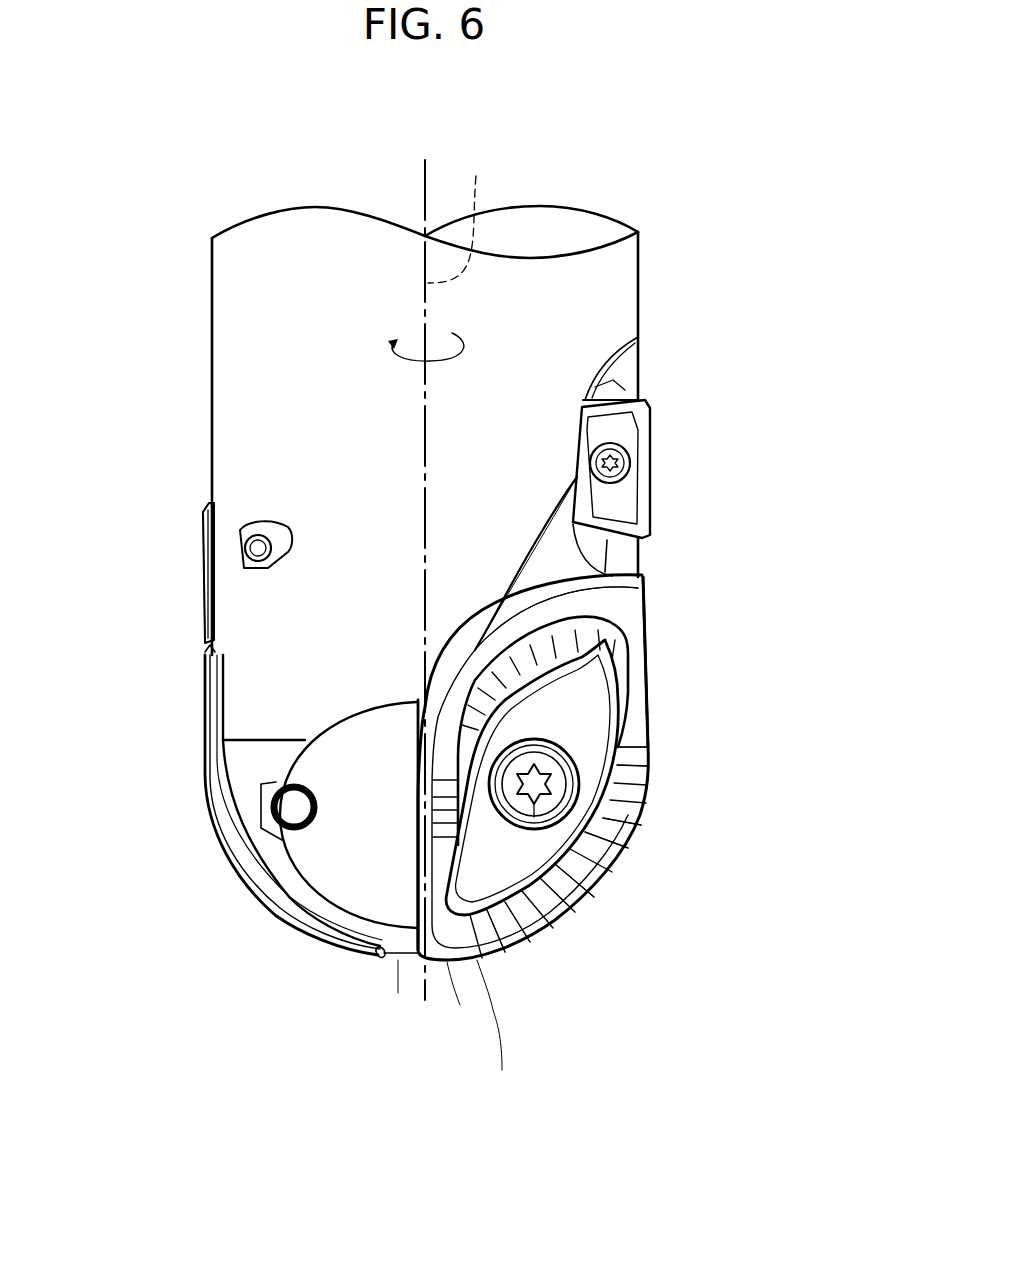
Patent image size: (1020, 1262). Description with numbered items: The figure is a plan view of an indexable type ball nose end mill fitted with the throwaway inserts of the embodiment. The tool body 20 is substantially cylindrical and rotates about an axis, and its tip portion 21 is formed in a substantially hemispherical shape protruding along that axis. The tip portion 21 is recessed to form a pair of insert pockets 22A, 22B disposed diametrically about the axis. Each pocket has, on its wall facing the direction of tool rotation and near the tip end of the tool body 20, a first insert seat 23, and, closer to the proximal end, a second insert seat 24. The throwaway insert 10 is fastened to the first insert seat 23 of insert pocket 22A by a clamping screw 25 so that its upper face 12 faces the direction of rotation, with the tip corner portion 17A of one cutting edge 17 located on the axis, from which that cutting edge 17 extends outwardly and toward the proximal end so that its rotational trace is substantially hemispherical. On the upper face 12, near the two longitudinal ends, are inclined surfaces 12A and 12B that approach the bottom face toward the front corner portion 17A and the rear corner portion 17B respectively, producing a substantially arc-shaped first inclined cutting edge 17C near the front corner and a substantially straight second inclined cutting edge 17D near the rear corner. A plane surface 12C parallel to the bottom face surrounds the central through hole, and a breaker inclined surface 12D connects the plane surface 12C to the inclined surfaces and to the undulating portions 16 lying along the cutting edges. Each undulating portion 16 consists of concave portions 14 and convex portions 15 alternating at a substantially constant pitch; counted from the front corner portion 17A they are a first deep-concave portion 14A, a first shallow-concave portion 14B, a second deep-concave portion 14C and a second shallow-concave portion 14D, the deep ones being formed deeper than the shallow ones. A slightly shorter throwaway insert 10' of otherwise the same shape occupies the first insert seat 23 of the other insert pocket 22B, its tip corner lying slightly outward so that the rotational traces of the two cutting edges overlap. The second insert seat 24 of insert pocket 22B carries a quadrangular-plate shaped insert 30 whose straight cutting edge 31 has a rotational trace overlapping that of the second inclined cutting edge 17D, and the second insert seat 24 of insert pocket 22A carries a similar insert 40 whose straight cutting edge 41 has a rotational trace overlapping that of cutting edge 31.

The throwaway insert 10 is at (533, 813).
The throwaway insert 10' is at (262, 825).
The upper face 12 is at (511, 575).
The inclined surface 12A is at (461, 1018).
The inclined surface 12B is at (725, 582).
The plane surface 12C is at (527, 594).
The breaker inclined surface 12D is at (718, 662).
The concave portion 14 is at (419, 649).
The first deep-concave portion 14A is at (591, 956).
The first shallow-concave portion 14B is at (679, 888).
The second deep-concave portion 14C is at (702, 833).
The second shallow-concave portion 14D is at (716, 746).
The convex portion 15 is at (567, 835).
The undulating portion 16 is at (563, 739).
The cutting edge 17 is at (420, 811).
The corner portion 17A is at (349, 1025).
The corner portion 17B is at (626, 599).
The first inclined cutting edge 17C is at (526, 784).
The second inclined cutting edge 17D is at (531, 841).
The tool body 20 is at (479, 570).
The tip portion 21 is at (264, 783).
The insert pocket 22A is at (615, 570).
The insert pocket 22B is at (228, 805).
The first insert seat 23 is at (436, 767).
The second insert seat 24 is at (439, 496).
The clamping screw 25 is at (534, 815).
The insert 30 is at (162, 573).
The cutting edge 31 is at (201, 574).
The insert 40 is at (664, 469).
The cutting edge 41 is at (673, 446).